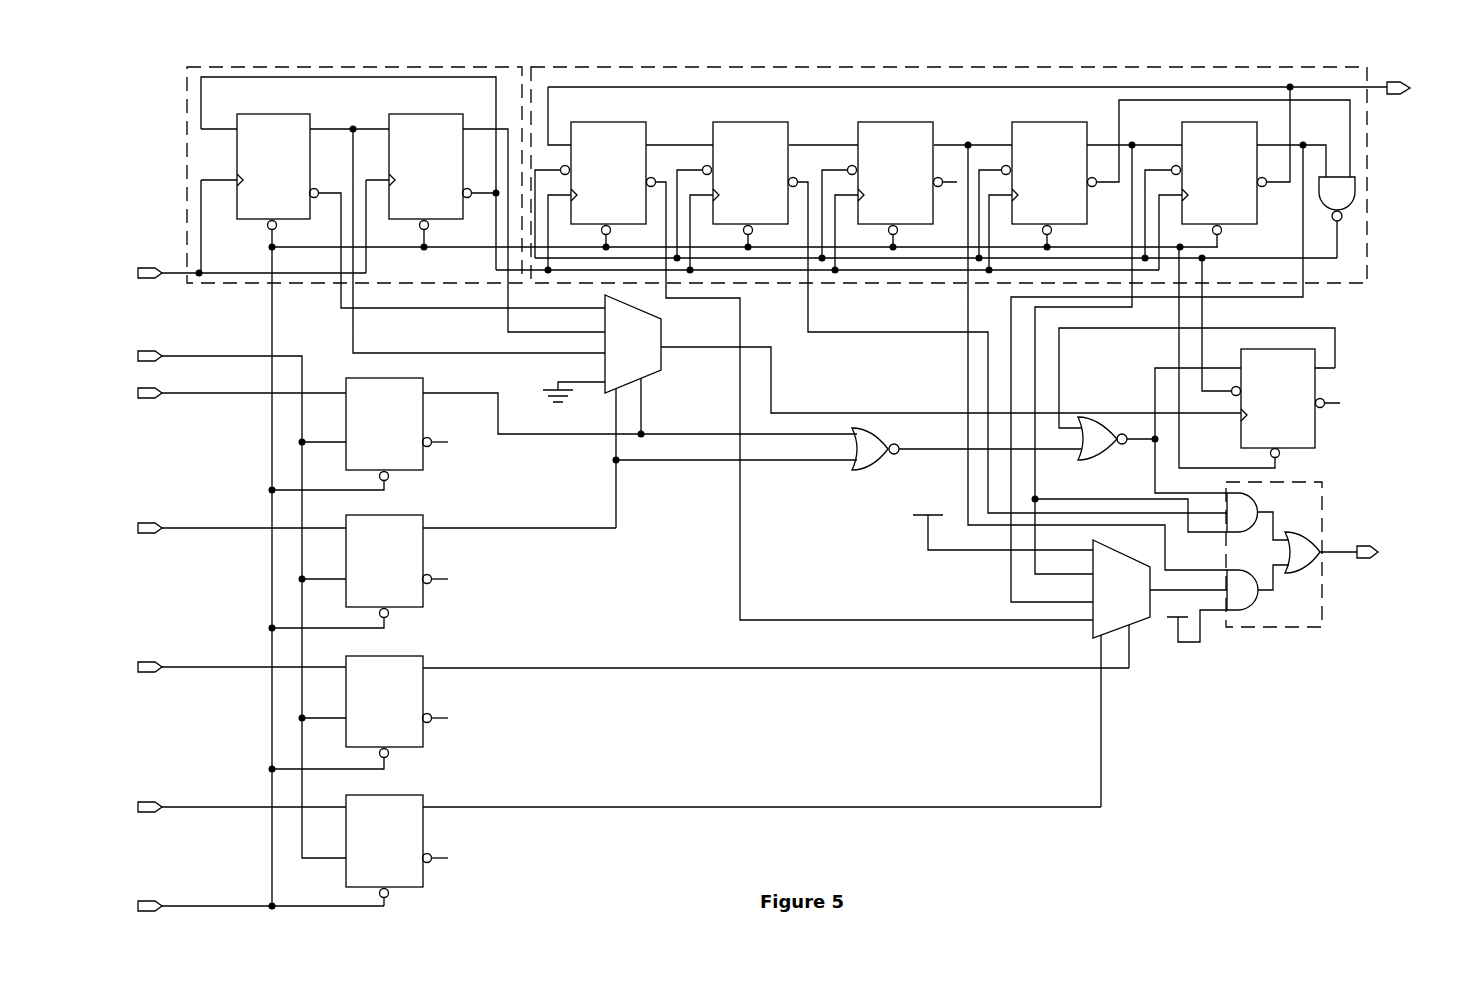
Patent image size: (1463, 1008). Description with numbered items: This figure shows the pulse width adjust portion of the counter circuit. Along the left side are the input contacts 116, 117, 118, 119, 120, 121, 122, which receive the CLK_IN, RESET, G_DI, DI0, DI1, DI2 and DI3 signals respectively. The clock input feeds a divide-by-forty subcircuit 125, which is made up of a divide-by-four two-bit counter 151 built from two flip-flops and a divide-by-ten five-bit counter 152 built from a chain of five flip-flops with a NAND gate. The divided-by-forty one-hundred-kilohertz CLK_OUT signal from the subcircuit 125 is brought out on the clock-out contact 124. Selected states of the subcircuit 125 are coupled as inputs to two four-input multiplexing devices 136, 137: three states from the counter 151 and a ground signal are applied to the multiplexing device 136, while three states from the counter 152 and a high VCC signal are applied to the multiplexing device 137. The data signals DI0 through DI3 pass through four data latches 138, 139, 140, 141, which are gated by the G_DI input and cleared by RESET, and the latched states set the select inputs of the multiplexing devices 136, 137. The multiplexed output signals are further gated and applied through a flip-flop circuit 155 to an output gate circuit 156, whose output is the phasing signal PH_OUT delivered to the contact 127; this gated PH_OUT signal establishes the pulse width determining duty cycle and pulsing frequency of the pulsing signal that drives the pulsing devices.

The divide-by-four 2-bit counter 151 is at (346, 68).
The divide-by-forty subcircuit 125 is at (742, 67).
The divide-by-ten 5-bit counter 152 is at (972, 67).
The clock-out contact 124 is at (1391, 82).
The input contact 116 is at (160, 281).
The input contact 118 is at (163, 351).
The input contact 119 is at (160, 398).
The input contact 120 is at (157, 538).
The input contact 121 is at (160, 675).
The input contact 122 is at (160, 814).
The input contact 117 is at (166, 904).
The data latch 138 is at (423, 468).
The data latch 139 is at (423, 605).
The data latch 140 is at (423, 744).
The data latch 141 is at (423, 884).
The four-input multiplexing device 136 is at (661, 372).
The four-input multiplexing device 137 is at (1151, 619).
The flip-flop circuit 155 is at (1317, 386).
The output gate circuit 156 is at (1325, 481).
The contact 127 is at (1367, 546).